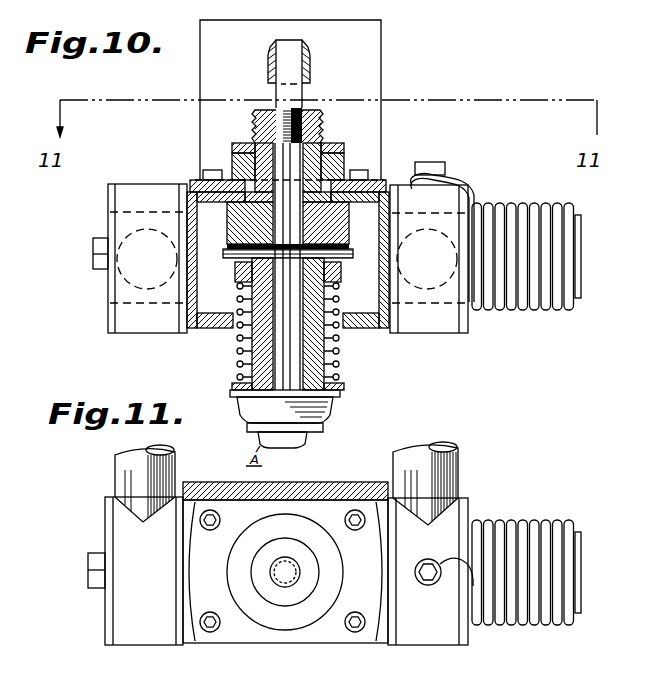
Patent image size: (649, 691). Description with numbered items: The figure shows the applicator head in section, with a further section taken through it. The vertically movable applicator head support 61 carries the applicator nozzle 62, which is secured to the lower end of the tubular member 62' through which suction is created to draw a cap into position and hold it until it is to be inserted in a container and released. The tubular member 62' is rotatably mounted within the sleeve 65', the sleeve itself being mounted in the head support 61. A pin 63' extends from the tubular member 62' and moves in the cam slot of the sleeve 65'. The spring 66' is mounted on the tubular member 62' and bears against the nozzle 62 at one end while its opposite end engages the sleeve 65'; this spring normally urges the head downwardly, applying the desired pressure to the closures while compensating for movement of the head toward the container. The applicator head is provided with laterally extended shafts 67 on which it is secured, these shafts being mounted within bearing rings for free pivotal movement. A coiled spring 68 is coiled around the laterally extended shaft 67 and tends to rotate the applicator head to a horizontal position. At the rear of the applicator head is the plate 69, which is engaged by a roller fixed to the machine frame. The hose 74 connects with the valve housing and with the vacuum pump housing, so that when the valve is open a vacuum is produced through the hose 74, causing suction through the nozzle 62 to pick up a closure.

In FIG. 10, the applicator head support 61 is at (374, 324).
In FIG. 11, the applicator head support 61 is at (328, 643).
In FIG. 10, the applicator nozzle 62 is at (294, 419).
In FIG. 10, the tubular member 62' is at (224, 340).
In FIG. 10, the pin 63' is at (286, 257).
In FIG. 10, the sleeve 65' is at (304, 280).
In FIG. 10, the spring 66' is at (268, 336).
In FIG. 10, the laterally extended shafts 67 is at (578, 226).
In FIG. 10, the coiled spring 68 is at (550, 312).
In FIG. 11, the coiled spring 68 is at (518, 519).
In FIG. 10, the plate 69 is at (381, 77).
In FIG. 11, the plate 69 is at (340, 483).
In FIG. 10, the hose 74 is at (306, 58).